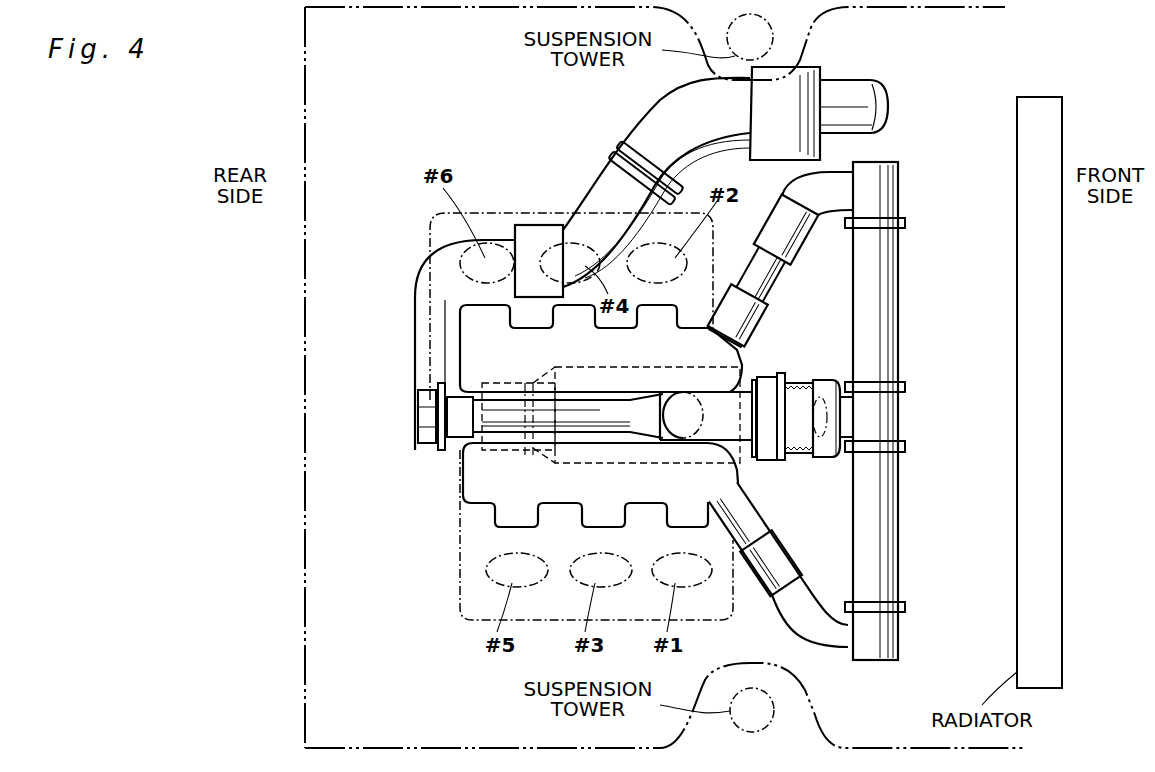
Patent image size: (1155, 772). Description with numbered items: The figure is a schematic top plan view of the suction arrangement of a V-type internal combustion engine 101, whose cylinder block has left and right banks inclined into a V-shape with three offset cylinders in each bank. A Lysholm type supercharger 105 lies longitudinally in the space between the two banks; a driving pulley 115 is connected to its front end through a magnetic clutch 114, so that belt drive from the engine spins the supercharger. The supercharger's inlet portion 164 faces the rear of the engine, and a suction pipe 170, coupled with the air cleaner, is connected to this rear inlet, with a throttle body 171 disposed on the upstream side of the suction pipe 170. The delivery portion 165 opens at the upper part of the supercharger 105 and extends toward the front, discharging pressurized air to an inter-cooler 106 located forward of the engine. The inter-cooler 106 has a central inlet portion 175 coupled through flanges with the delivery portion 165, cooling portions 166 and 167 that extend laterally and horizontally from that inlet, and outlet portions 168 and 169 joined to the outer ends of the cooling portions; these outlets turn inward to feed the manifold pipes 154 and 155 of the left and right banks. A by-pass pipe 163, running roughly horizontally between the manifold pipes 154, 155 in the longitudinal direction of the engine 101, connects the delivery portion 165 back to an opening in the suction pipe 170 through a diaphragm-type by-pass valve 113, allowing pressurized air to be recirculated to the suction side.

The V-type internal combustion engine 101 is at (922, 130).
The inter-cooler 106 is at (918, 356).
The Lysholm type supercharger 105 is at (755, 358).
The by-pass valve 113 is at (432, 420).
The magnetic clutch 114 is at (763, 458).
The driving pulley 115 is at (798, 456).
The manifold pipe 154 is at (478, 458).
The manifold pipe 155 is at (462, 345).
The by-pass pipe 163 is at (580, 417).
The inlet portion 164 is at (532, 443).
The delivery portion 165 is at (690, 412).
The cooling portion 166 is at (888, 527).
The cooling portion 167 is at (887, 287).
The outlet portion 168 is at (885, 632).
The outlet portion 169 is at (887, 195).
The suction pipe 170 is at (430, 370).
The throttle body 171 is at (540, 233).
The central inlet portion 175 is at (898, 418).